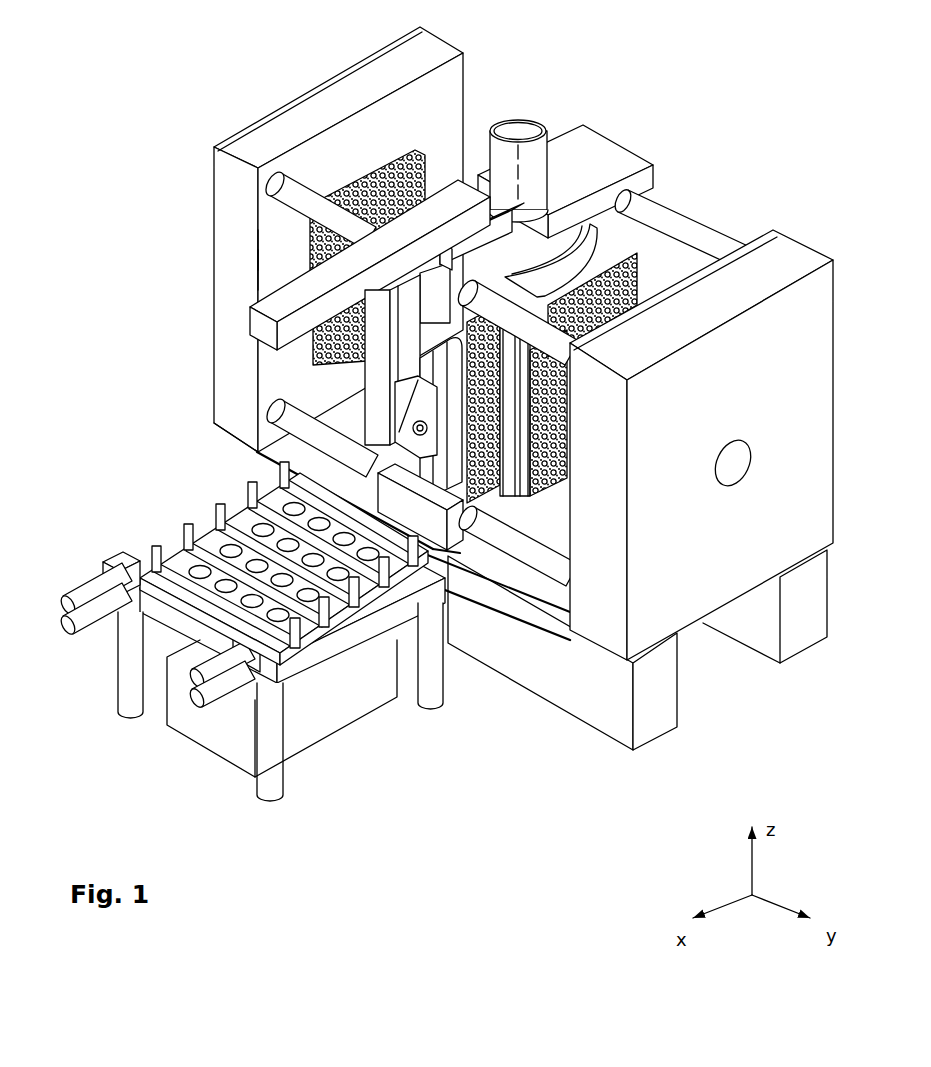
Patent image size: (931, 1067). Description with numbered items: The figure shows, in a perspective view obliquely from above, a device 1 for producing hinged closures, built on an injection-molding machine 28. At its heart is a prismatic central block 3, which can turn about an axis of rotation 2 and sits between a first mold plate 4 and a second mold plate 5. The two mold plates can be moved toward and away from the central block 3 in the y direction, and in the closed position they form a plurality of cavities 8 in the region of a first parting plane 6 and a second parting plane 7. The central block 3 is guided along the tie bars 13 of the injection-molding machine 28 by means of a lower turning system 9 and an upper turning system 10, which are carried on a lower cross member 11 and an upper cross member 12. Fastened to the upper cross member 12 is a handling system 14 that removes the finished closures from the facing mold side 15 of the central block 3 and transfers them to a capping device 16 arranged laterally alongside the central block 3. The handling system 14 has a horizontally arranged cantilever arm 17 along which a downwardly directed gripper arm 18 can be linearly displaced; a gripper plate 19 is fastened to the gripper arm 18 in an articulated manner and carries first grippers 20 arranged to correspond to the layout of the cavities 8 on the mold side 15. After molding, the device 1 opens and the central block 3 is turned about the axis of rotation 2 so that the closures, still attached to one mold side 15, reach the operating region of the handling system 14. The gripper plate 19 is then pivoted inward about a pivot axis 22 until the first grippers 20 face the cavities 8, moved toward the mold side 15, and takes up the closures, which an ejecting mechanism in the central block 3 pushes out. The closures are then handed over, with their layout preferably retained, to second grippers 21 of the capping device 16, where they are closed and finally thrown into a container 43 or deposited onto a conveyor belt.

The device 1 is at (202, 92).
The axis of rotation 2 is at (518, 128).
The central block 3 is at (612, 247).
The first mold plate 4 is at (724, 243).
The second mold plate 5 is at (290, 187).
The first parting plane 6 is at (560, 516).
The second parting plane 7 is at (300, 247).
The cavities 8 is at (347, 177).
The lower turning system 9 is at (535, 518).
The upper turning system 10 is at (524, 133).
The lower cross member 11 is at (393, 503).
The upper cross member 12 is at (596, 160).
The tie bars 13 is at (258, 193).
The handling system 14 is at (280, 270).
The mold side 15 is at (508, 472).
The capping device 16 is at (298, 703).
The cantilever arm 17 is at (292, 295).
The gripper arm 18 is at (377, 368).
The gripper plate 19 is at (397, 457).
The first grippers 20 is at (493, 420).
The second grippers 21 is at (170, 541).
The pivot axis 22 is at (395, 420).
The injection-molding machine 28 is at (697, 130).
The container 43 is at (220, 730).